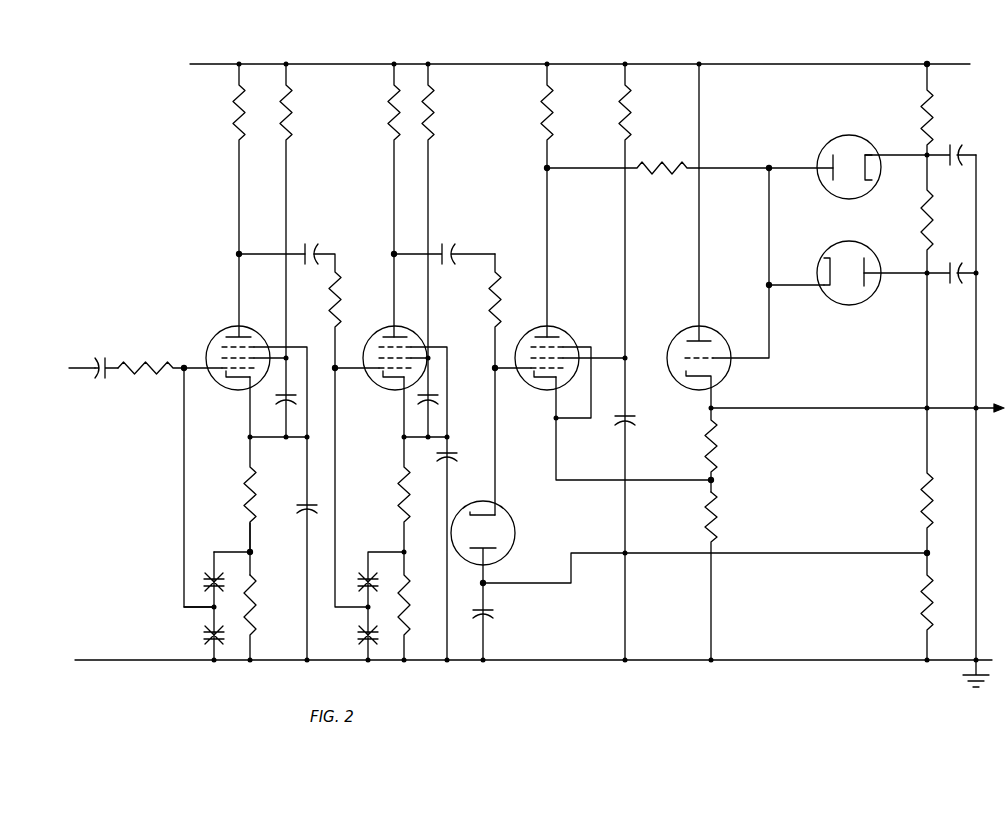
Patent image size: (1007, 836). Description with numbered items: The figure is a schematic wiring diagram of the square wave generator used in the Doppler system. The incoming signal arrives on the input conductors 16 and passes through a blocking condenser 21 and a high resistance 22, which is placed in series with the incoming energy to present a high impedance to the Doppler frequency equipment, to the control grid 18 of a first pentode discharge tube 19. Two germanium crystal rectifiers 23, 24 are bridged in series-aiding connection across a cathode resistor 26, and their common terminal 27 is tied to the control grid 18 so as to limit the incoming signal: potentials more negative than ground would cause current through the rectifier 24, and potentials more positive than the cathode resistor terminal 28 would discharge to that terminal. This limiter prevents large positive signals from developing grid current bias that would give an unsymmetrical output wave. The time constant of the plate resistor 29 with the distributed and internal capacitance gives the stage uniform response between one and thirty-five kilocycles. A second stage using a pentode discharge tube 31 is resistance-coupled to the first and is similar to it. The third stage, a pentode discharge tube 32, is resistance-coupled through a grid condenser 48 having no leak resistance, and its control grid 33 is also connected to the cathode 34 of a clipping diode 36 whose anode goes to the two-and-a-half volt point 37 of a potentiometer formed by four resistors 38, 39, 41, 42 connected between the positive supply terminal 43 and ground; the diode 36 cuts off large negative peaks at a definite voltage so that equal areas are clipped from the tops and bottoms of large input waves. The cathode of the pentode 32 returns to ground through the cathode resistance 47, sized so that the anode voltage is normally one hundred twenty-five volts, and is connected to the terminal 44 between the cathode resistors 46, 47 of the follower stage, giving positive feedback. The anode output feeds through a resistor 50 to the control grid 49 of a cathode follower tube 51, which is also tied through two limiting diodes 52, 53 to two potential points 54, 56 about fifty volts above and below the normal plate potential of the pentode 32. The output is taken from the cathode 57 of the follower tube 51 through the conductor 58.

The input conductors 16 is at (94, 658).
The blocking condenser 21 is at (106, 346).
The high resistance 22 is at (150, 346).
The control grid 18 is at (216, 377).
The pentode discharge tube 19 is at (258, 338).
The plate resistor 29 is at (232, 114).
The cathode resistor terminal 28 is at (260, 547).
The cathode resistor 26 is at (252, 608).
The germanium crystal rectifier 23 is at (208, 580).
The germanium crystal rectifier 24 is at (206, 636).
The common terminal 27 is at (219, 600).
The pentode discharge tube 31 is at (386, 330).
The grid condenser 48 is at (449, 252).
The control grid 33 is at (498, 372).
The pentode discharge tube 32 is at (574, 336).
The cathode 34 is at (491, 515).
The clipping diode 36 is at (510, 554).
The 2½ volt point 37 is at (935, 547).
The resistor 50 is at (659, 164).
The cathode follower tube 51 is at (684, 328).
The control grid 49 is at (724, 356).
The cathode 57 is at (715, 378).
The conductor 58 is at (985, 408).
The cathode resistor 46 is at (714, 430).
The terminal 44 is at (713, 480).
The cathode resistance 47 is at (712, 516).
The terminal 43 is at (931, 52).
The resistor 38 is at (928, 112).
The resistor 39 is at (928, 218).
The resistor 41 is at (924, 512).
The resistor 42 is at (924, 602).
The limiting diode 52 is at (848, 200).
The potential point 54 is at (923, 156).
The limiting diode 53 is at (848, 306).
The potential point 56 is at (923, 274).